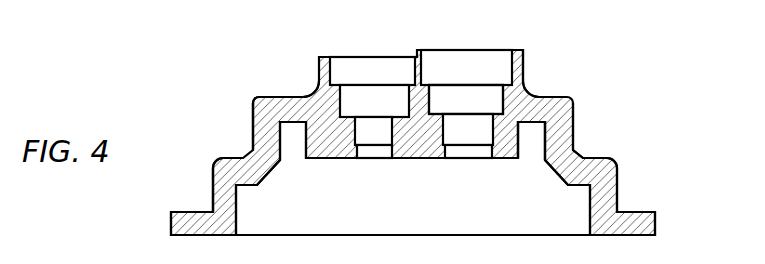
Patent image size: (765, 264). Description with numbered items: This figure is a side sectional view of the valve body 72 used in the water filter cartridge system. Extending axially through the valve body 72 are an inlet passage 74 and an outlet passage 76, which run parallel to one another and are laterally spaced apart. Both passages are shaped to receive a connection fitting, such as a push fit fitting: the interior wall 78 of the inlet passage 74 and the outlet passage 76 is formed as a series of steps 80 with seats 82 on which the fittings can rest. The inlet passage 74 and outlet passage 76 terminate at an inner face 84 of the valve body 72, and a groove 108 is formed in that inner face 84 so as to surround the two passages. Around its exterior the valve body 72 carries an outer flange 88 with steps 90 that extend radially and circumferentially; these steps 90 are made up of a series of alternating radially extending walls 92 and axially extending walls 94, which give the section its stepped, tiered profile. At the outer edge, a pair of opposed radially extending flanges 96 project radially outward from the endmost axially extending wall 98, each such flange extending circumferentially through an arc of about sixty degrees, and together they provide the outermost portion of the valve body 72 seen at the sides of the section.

The valve body 72 is at (622, 88).
The inlet passage 74 is at (498, 57).
The outlet passage 76 is at (345, 63).
The interior wall 78 is at (424, 72).
The steps 80 is at (533, 95).
The seats 82 is at (496, 110).
The inner face 84 is at (326, 158).
The outer flange 88 is at (288, 97).
The steps 90 is at (222, 166).
The radially extending walls 92 is at (277, 105).
The axially extending walls 94 is at (252, 128).
The radially extending flanges 96 is at (171, 226).
The endmost axially extending wall 98 is at (605, 195).
The groove 108 is at (531, 127).